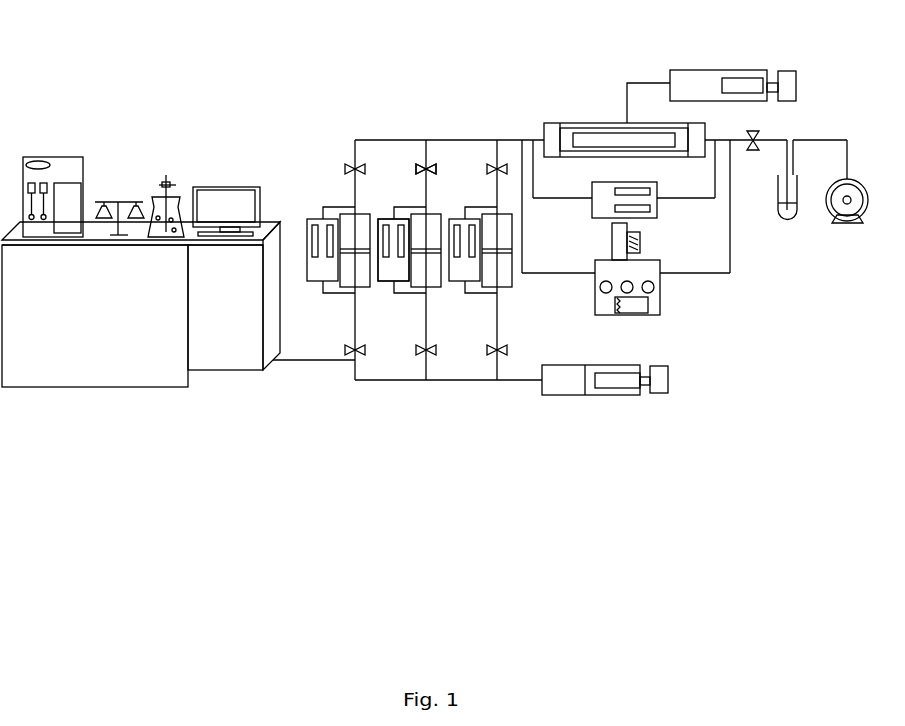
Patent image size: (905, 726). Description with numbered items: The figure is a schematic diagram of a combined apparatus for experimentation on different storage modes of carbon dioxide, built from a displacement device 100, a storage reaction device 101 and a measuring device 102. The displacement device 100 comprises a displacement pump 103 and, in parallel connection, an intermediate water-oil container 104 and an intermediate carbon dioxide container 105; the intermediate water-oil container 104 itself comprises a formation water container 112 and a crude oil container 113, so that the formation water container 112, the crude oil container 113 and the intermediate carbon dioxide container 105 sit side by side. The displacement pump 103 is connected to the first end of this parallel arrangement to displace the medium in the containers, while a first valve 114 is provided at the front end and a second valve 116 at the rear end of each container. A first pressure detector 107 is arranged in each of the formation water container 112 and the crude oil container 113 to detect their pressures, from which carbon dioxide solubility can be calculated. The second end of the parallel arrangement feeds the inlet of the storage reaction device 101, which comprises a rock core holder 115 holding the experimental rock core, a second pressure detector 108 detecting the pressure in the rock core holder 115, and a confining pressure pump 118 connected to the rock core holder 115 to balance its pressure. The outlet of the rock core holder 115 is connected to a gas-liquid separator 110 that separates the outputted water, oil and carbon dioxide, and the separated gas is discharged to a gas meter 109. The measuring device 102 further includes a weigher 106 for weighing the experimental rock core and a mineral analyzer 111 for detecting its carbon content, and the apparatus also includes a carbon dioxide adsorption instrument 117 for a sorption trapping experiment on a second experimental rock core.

The displacement device 100 is at (590, 396).
The storage reaction device 101 is at (620, 118).
The measuring device 102 is at (84, 155).
The displacement pump 103 is at (663, 382).
The intermediate water-oil container 104 is at (441, 351).
The intermediate carbon dioxide container 105 is at (505, 273).
The weigher 106 is at (114, 203).
The first pressure detector 107 is at (392, 242).
The second pressure detector 108 is at (592, 198).
The gas meter 109 is at (848, 218).
The gas-liquid separator 110 is at (788, 215).
The mineral analyzer 111 is at (653, 292).
The formation water container 112 is at (360, 275).
The crude oil container 113 is at (433, 277).
The first valve 114 is at (425, 165).
The rock core holder 115 is at (580, 128).
The second valve 116 is at (345, 353).
The carbon dioxide adsorption instrument 117 is at (57, 163).
The confining pressure pump 118 is at (725, 73).